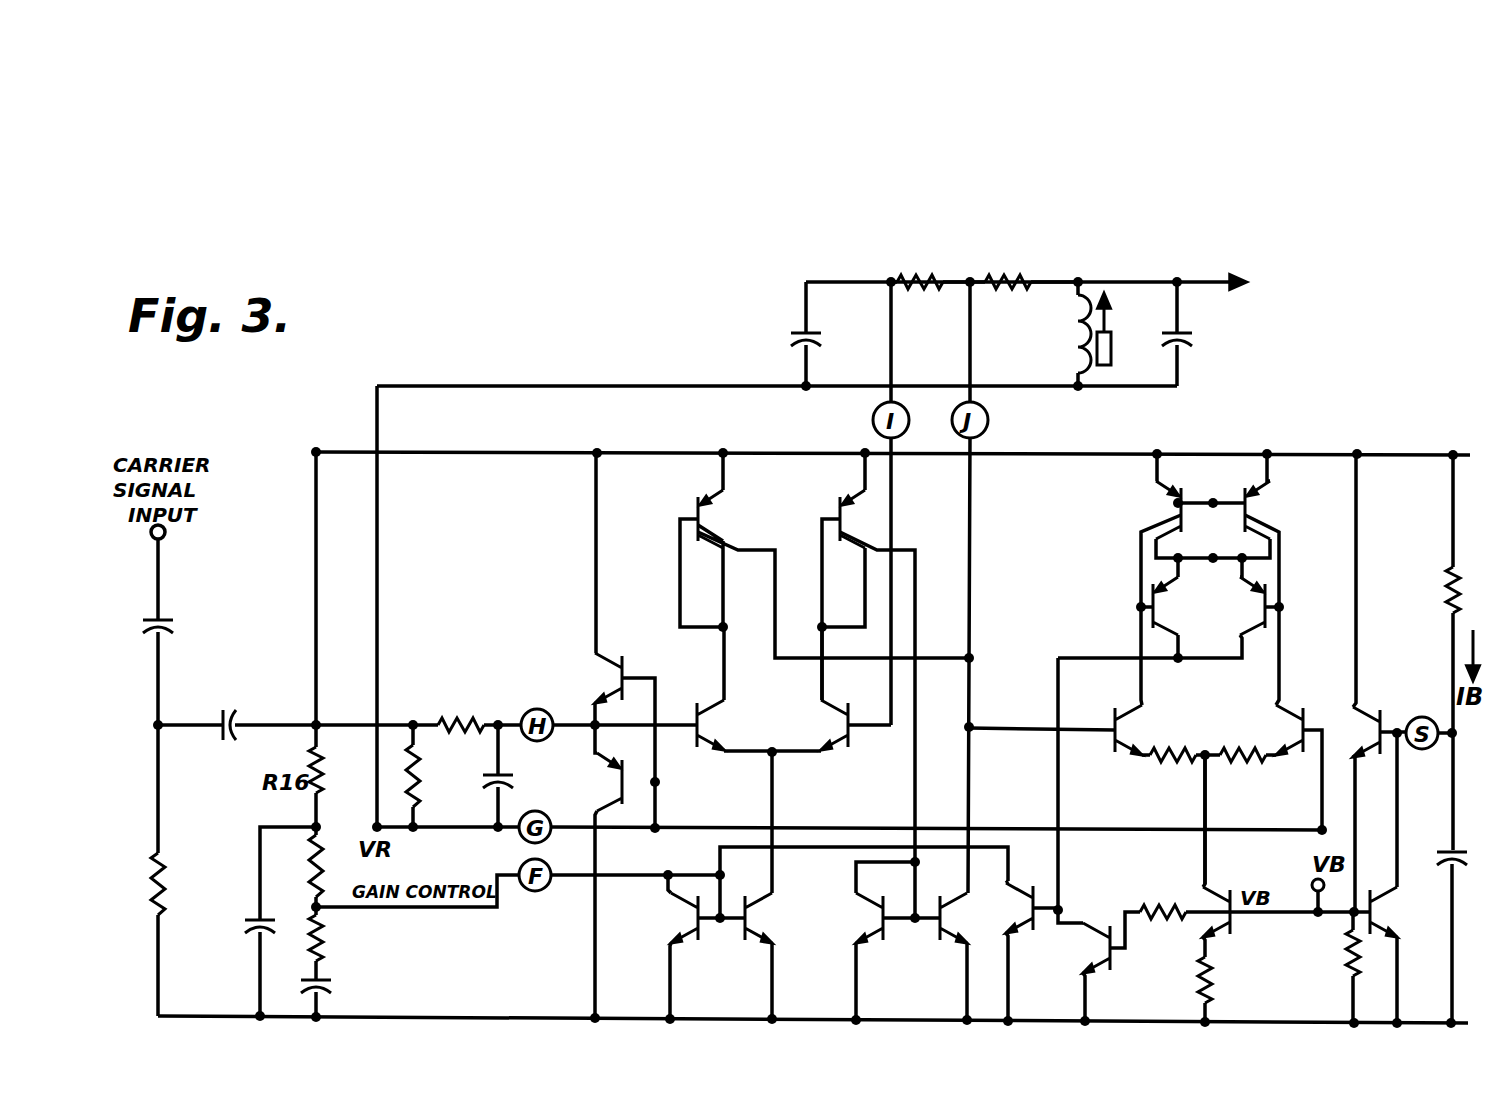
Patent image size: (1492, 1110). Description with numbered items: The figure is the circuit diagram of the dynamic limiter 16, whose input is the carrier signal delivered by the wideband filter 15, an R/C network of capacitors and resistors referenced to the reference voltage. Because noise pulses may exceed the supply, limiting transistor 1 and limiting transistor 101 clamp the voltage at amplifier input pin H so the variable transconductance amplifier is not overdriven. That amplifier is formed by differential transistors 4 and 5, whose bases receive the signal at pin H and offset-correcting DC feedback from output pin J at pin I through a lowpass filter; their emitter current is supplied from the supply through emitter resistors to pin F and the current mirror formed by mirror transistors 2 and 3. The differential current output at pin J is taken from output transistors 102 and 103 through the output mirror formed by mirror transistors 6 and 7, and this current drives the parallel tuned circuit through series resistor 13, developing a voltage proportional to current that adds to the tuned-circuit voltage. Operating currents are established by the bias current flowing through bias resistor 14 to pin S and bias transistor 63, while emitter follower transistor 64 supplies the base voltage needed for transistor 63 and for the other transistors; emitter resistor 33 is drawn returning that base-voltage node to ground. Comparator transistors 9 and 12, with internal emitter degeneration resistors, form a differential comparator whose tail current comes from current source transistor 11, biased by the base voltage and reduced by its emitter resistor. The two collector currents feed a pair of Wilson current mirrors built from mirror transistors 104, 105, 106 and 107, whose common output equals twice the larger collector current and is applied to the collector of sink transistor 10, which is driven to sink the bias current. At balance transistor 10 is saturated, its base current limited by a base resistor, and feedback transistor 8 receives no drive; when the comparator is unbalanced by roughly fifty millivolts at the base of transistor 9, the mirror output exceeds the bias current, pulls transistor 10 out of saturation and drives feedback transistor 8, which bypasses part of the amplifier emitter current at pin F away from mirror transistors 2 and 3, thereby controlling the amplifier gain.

The dynamic limiter 16 is at (467, 357).
The transistor Q1 1 is at (884, 537).
The transistor Q2 2 is at (919, 909).
The transistor Q3 3 is at (998, 949).
The transistor Q4 4 is at (704, 688).
The transistor Q5 5 is at (535, 716).
The transistor Q6 6 is at (683, 859).
The transistor Q7 7 is at (869, 635).
The feedback transistor Q8 8 is at (1111, 633).
The transistor Q9 9 is at (627, 809).
The transistor Q10 10 is at (706, 875).
The transistor Q11 11 is at (861, 819).
The transistor Q12 12 is at (1118, 499).
The resistor R13 13 is at (1013, 266).
The resistor R14 14 is at (884, 764).
The wideband filter 15 is at (292, 866).
The resistor R33 33 is at (1326, 955).
The transistor Q63 63 is at (1378, 901).
The emitter follower transistor Q64 64 is at (1383, 719).
The transistor Q101 101 is at (594, 782).
The transistor Q102 102 is at (737, 519).
The transistor Q103 103 is at (825, 518).
The Wilson current mirror transistor Q104 104 is at (1150, 510).
The Wilson current mirror transistor Q105 105 is at (1185, 606).
The Wilson current mirror transistor Q106 106 is at (1286, 510).
The Wilson current mirror transistor Q107 107 is at (1245, 606).